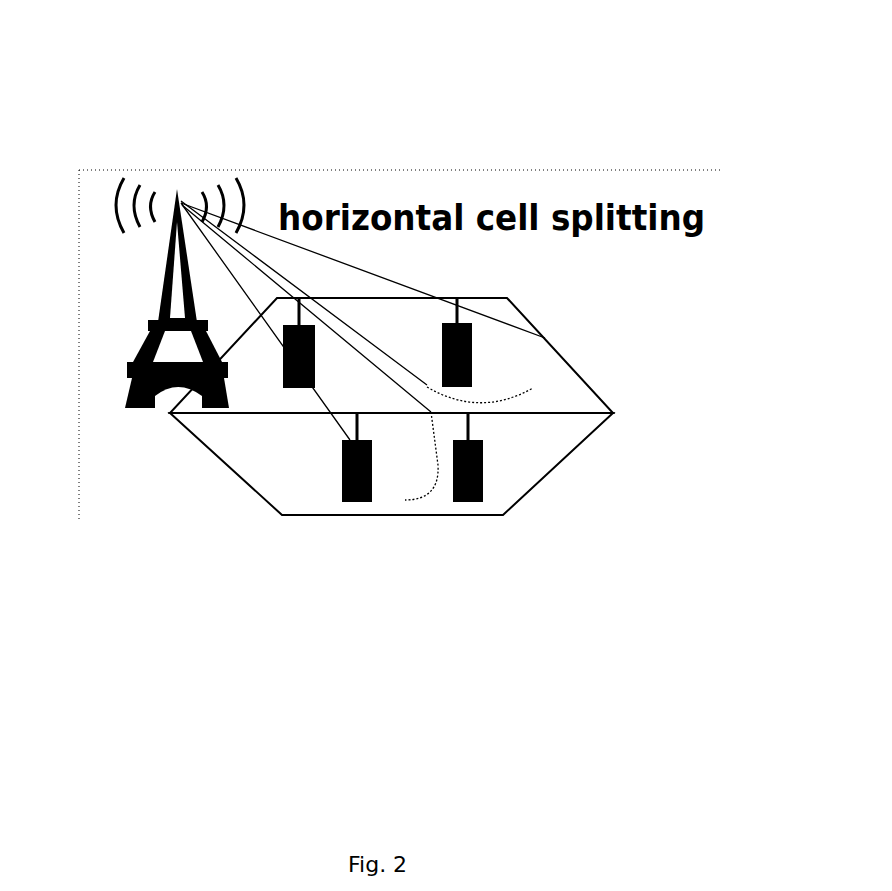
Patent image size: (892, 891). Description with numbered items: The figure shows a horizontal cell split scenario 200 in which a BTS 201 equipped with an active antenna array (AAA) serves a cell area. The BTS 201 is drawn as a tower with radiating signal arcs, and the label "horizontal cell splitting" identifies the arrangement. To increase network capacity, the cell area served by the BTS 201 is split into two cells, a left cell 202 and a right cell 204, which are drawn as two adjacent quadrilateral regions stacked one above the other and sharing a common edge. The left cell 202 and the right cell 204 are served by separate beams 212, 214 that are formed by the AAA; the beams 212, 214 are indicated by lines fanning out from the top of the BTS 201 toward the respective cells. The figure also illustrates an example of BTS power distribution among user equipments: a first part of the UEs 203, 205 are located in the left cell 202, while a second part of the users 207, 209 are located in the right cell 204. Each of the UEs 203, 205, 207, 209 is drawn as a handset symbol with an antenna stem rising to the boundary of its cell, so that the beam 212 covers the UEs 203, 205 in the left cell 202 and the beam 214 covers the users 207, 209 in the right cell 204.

The horizontal cell split scenario 200 is at (359, 104).
The BTS 201 is at (95, 260).
The left cell 202 is at (477, 288).
The UE 203 is at (289, 399).
The right cell 204 is at (566, 462).
The UE 205 is at (479, 336).
The user 207 is at (357, 505).
The user 209 is at (490, 449).
The beam 212 is at (535, 395).
The beam 214 is at (441, 477).